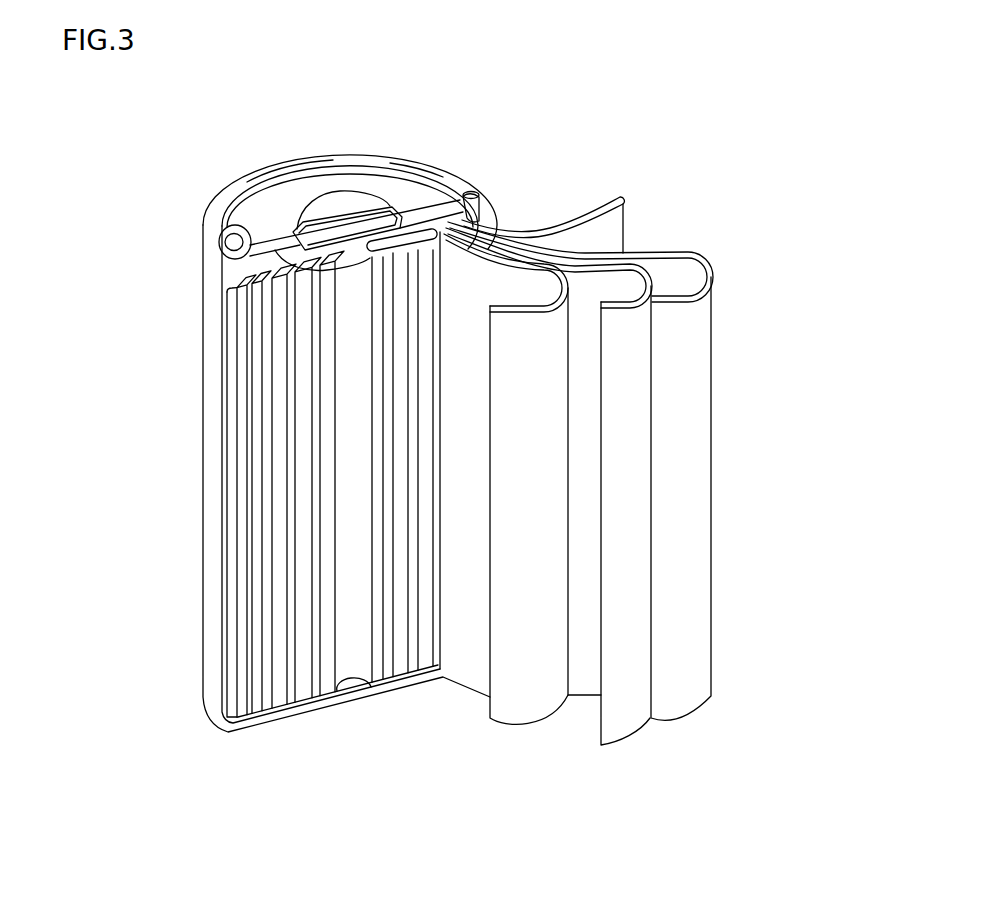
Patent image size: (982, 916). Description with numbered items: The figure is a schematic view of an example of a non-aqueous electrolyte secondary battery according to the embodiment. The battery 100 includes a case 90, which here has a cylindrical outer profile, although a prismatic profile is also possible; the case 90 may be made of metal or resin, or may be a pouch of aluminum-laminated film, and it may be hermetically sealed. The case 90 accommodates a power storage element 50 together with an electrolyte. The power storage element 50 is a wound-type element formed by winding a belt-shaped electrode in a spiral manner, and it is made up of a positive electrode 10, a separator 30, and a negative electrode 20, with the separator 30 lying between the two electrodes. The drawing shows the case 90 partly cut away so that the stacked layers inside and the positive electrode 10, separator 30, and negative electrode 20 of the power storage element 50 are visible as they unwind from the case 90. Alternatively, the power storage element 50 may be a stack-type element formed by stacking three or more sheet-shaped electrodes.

The battery 100 is at (540, 110).
The case 90 is at (210, 425).
The power storage element 50 is at (492, 795).
The positive electrode 10 is at (527, 718).
The negative electrode 20 is at (690, 711).
The separator 30 is at (610, 738).